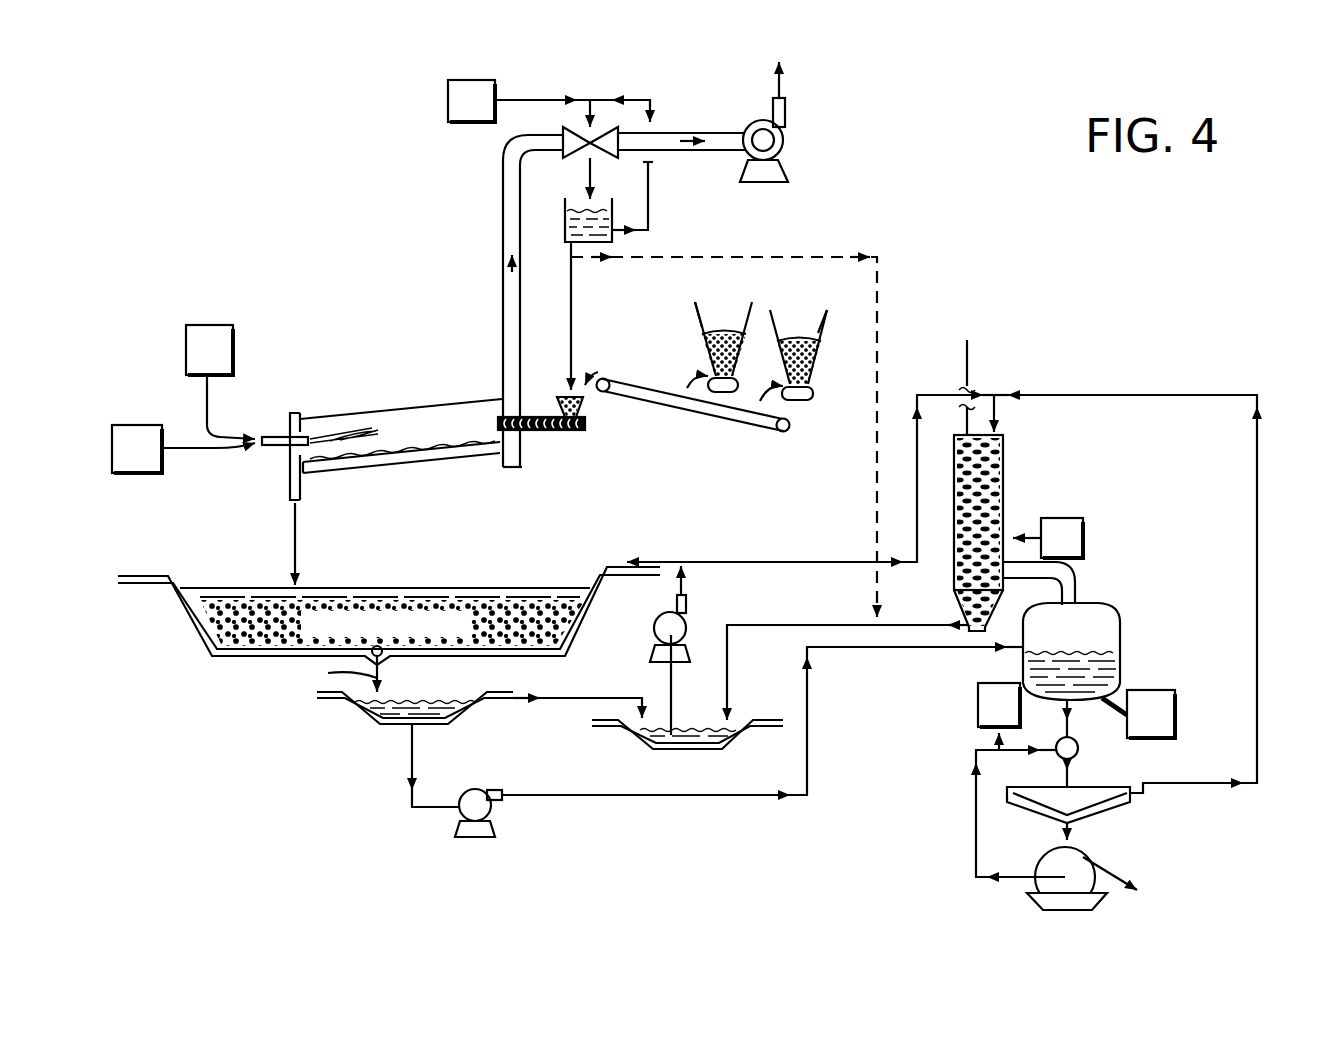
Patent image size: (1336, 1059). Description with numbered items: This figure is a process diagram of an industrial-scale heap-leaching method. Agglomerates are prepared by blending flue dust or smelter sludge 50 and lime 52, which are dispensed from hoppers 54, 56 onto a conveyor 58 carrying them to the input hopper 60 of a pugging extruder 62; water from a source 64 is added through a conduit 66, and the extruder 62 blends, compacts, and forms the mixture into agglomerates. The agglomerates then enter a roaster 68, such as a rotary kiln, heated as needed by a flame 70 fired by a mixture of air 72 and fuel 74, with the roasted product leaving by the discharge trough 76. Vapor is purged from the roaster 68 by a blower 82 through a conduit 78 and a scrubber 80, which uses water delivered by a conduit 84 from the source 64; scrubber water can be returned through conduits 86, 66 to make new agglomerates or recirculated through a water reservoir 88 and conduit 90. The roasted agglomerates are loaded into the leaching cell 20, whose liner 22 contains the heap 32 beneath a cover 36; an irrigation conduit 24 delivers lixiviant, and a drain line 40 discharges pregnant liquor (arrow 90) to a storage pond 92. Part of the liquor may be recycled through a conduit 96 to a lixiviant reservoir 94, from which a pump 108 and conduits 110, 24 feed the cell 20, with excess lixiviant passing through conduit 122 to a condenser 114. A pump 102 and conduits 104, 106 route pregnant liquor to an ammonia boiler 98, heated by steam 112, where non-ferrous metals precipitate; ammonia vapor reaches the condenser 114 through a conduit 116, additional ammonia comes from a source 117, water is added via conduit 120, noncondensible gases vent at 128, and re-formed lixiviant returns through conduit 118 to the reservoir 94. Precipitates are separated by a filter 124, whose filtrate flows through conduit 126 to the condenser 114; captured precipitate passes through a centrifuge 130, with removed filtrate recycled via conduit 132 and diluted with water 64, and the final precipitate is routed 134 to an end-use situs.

The leaching cell 20 is at (187, 660).
The liner 22 is at (185, 612).
The irrigation conduit 24 is at (333, 597).
The heap 32 is at (275, 633).
The cover 36 is at (240, 586).
The drain line 40 is at (385, 652).
The flue dust or smelter sludge 50 is at (722, 333).
The lime 52 is at (800, 340).
The hopper 54 is at (702, 327).
The hopper 56 is at (818, 333).
The conveyor 58 is at (706, 416).
The input hopper 60 is at (585, 412).
The pugging extruder 62 is at (552, 432).
The water source 64 is at (448, 108).
The conduit 66 is at (571, 287).
The roaster 68 is at (422, 404).
The flame 70 is at (340, 437).
The air 72 is at (130, 425).
The fuel 74 is at (186, 342).
The agglomerate discharge trough 76 is at (425, 452).
The conduit 78 is at (503, 258).
The scrubber 80 is at (603, 159).
The blower 82 is at (788, 147).
The conduit 84 is at (590, 108).
The conduit 86 is at (590, 178).
The water reservoir 88 is at (565, 222).
The conduit 90 is at (648, 207).
The pregnant-liquor storage pond 92 is at (370, 714).
The lixiviant reservoir 94 is at (650, 740).
The conduit 96 is at (625, 695).
The ammonia boiler 98 is at (1120, 632).
The pump 102 is at (493, 812).
The conduit 104 is at (412, 770).
The conduit 106 is at (686, 795).
The pump 108 is at (662, 620).
The conduit 110 is at (673, 710).
The steam 112 is at (1175, 692).
The condenser 114 is at (1003, 462).
The conduit 116 is at (1075, 572).
The ammonia source 117 is at (1083, 522).
The conduit 118 is at (820, 625).
The conduit 120 is at (879, 303).
The conduit 122 is at (762, 562).
The filter 124 is at (1105, 812).
The conduit 126 is at (1257, 591).
The vent 128 is at (967, 350).
The centrifuge 130 is at (1050, 856).
The conduit 132 is at (976, 830).
The precipitate routing 134 is at (1112, 873).